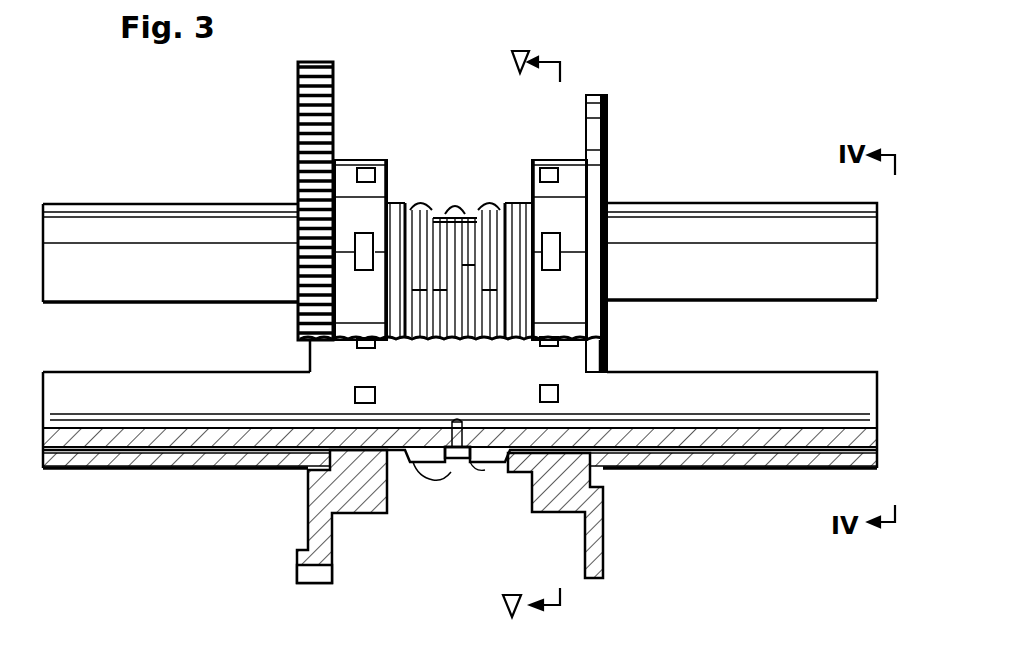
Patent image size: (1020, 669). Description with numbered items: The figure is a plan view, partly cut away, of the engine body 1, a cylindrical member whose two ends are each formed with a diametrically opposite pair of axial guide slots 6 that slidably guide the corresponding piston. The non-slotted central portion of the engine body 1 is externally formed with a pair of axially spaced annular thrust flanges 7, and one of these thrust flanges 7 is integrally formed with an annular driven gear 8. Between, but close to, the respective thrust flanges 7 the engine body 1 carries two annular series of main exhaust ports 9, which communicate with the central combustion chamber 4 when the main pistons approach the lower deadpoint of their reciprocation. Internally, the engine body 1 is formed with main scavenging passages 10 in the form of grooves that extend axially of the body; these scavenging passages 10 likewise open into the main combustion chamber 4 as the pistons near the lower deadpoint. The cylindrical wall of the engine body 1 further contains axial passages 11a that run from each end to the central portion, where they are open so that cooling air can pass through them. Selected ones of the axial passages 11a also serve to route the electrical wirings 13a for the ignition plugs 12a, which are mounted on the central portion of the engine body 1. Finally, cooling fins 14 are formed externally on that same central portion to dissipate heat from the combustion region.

The engine body 1 is at (622, 188).
The central combustion chamber 4 is at (460, 370).
The axial guide slots 6 is at (85, 335).
The annular thrust flanges 7 is at (323, 535).
The annular driven gear 8 is at (310, 575).
The main exhaust ports 9 is at (366, 252).
The main scavenging passages 10 is at (297, 417).
The axial passages 11a is at (92, 455).
The ignition plugs 12a is at (458, 212).
The electrical wirings 13a is at (436, 200).
The cooling fins 14 is at (481, 460).